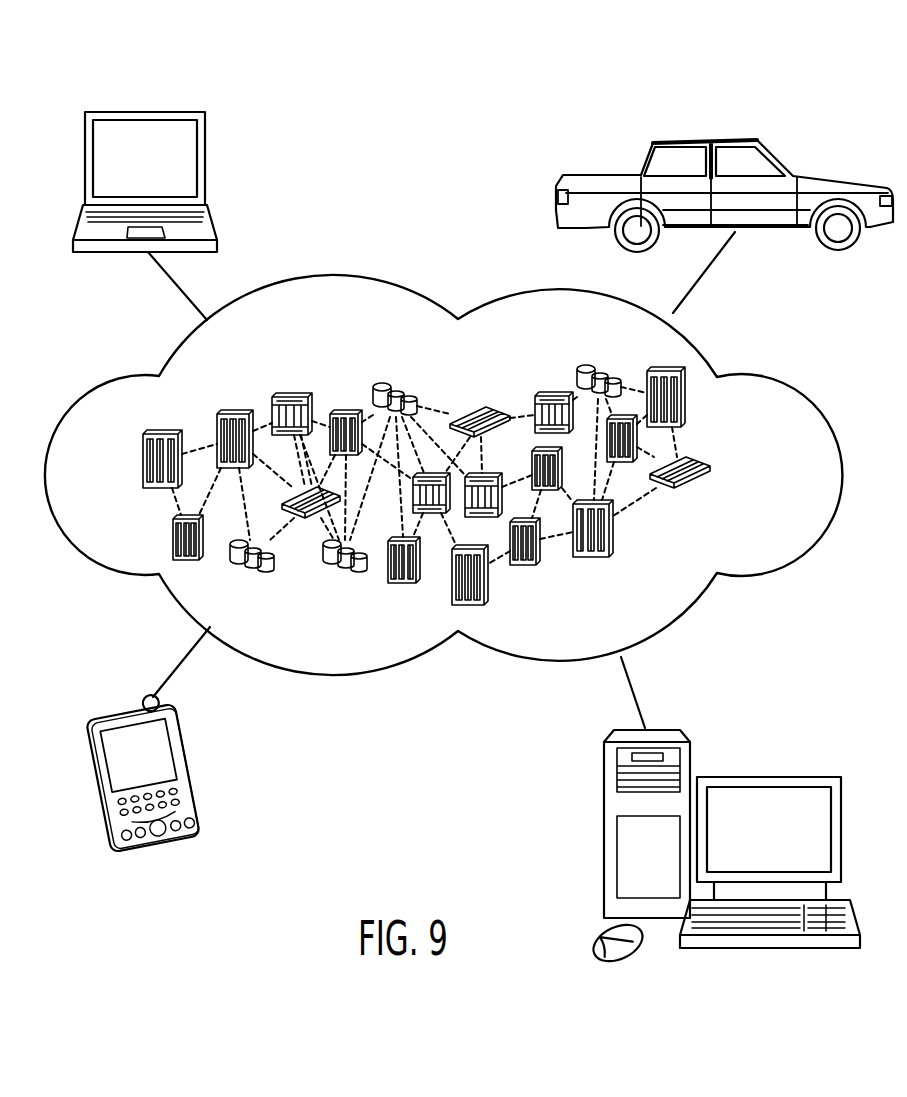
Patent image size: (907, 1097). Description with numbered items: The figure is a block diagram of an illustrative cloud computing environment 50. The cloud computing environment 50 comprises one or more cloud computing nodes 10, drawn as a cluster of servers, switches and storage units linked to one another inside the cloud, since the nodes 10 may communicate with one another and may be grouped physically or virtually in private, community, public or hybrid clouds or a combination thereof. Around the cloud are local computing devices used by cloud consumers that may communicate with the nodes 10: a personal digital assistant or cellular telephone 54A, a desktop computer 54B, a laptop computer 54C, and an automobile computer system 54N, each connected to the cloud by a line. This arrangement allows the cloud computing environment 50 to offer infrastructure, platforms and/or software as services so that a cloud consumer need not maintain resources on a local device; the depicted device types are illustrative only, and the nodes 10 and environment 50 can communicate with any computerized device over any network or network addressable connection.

The cloud computing node 10 is at (726, 475).
The cloud computing environment 50 is at (783, 378).
The personal digital assistant (PDA) or cellular telephone 54A is at (124, 712).
The desktop computer 54B is at (770, 775).
The laptop computer 54C is at (144, 111).
The automobile computer system 54N is at (706, 139).